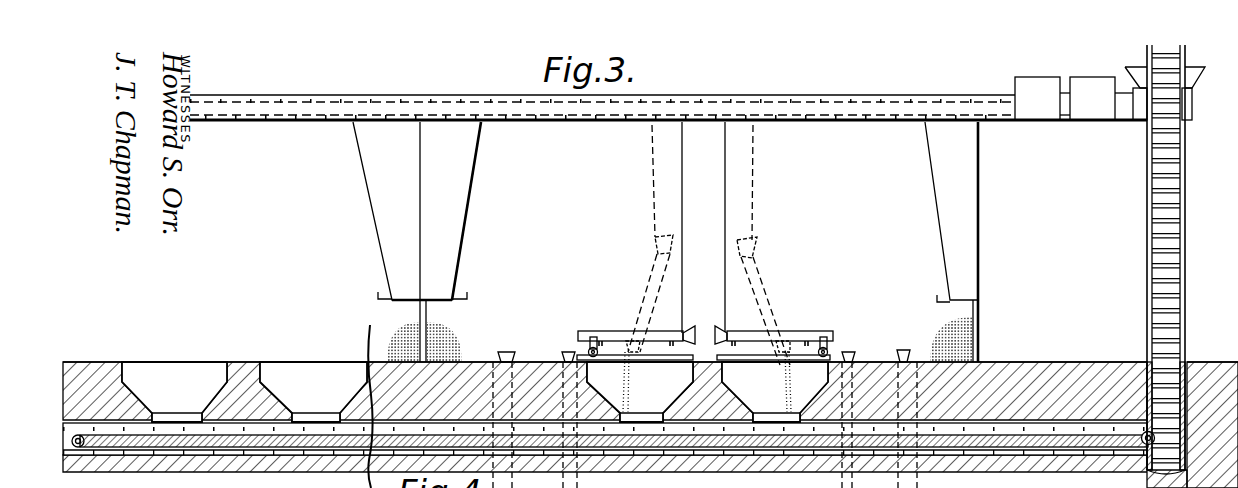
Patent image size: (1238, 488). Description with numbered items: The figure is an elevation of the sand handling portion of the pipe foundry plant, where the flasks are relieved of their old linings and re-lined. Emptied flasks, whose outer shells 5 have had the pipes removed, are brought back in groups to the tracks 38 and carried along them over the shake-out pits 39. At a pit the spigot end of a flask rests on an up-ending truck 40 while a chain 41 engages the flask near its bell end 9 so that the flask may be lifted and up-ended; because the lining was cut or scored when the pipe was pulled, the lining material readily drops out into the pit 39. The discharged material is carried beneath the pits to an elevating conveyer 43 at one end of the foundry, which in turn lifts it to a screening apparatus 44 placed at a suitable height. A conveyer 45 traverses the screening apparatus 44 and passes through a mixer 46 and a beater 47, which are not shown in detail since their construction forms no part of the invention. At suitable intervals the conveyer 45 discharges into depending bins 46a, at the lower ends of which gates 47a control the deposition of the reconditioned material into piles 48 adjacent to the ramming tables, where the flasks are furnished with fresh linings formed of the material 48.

The outer shell of the mold or flask 5 is at (646, 270).
The bell end of the flask 9 is at (661, 238).
The tracks 38 is at (634, 350).
The shake-out pits 39 is at (475, 392).
The up-ending truck 40 is at (589, 340).
The chain 41 is at (650, 212).
The elevating conveyer 43 is at (1162, 297).
The screening apparatus 44 is at (1193, 110).
The conveyer 45 is at (853, 93).
The mixer 46 is at (1098, 114).
The depending bins 46a is at (996, 237).
The beater 47 is at (1043, 114).
The gates 47a is at (936, 300).
The piles of material 48 is at (396, 340).